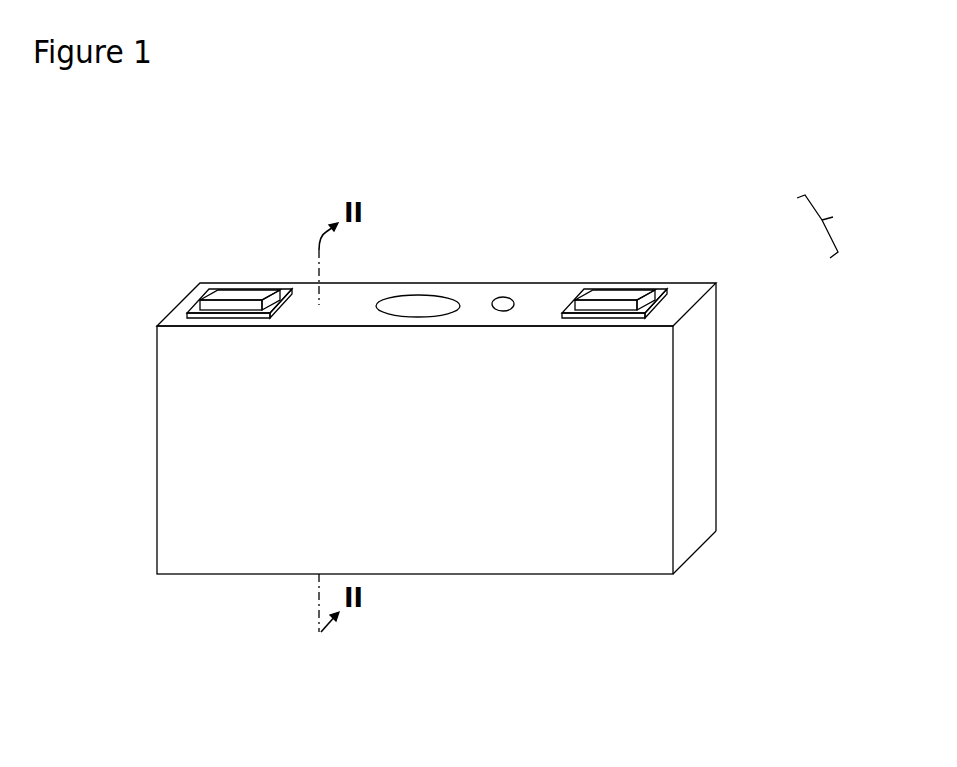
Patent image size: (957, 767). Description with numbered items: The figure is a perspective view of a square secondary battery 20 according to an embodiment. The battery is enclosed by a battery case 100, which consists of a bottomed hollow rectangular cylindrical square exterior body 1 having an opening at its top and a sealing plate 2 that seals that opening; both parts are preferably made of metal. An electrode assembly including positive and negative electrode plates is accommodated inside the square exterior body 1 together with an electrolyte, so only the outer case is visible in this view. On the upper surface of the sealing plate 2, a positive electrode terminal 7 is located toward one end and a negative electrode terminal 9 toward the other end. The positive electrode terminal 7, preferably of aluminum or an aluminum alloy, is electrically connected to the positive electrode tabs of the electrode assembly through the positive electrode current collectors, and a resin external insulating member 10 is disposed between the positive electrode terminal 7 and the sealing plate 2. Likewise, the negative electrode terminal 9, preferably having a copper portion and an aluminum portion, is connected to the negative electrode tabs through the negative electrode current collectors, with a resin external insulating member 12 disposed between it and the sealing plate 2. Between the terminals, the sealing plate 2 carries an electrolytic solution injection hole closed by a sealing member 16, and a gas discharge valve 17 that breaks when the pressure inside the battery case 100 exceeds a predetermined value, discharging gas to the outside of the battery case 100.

The battery case 100 is at (843, 226).
The square secondary battery 20 is at (186, 155).
The square exterior body 1 is at (703, 362).
The sealing plate 2 is at (682, 293).
The positive electrode terminal 7 is at (628, 297).
The external insulating member 10 is at (575, 303).
The negative electrode terminal 9 is at (248, 297).
The external insulating member 12 is at (207, 305).
The sealing member 16 is at (508, 297).
The gas discharge valve 17 is at (413, 317).